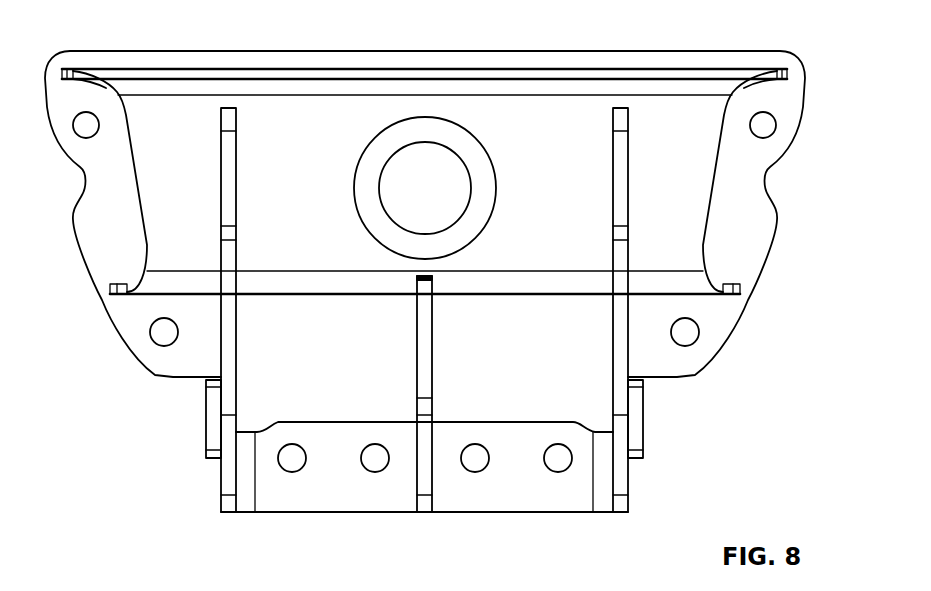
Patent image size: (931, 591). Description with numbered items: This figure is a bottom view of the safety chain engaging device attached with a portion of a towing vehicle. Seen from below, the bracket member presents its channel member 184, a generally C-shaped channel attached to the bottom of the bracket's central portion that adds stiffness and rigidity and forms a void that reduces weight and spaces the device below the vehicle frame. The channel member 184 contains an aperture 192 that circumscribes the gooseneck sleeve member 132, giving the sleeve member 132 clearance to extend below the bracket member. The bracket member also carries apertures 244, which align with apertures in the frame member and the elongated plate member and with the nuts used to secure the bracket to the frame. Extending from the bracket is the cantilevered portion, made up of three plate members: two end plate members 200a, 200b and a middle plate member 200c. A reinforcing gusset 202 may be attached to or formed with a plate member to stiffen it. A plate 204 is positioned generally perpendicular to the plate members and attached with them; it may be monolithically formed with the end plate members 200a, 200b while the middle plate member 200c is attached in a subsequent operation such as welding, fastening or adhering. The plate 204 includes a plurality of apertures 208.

The channel member 184 is at (678, 116).
The aperture 192 is at (464, 129).
The gooseneck sleeve member 132 is at (365, 188).
The apertures 244 is at (86, 125).
The end plate member 200a is at (622, 334).
The end plate member 200b is at (228, 478).
The middle plate member 200c is at (424, 330).
The reinforcing gusset 202 is at (212, 431).
The plate 204 is at (588, 505).
The apertures 208 is at (292, 458).